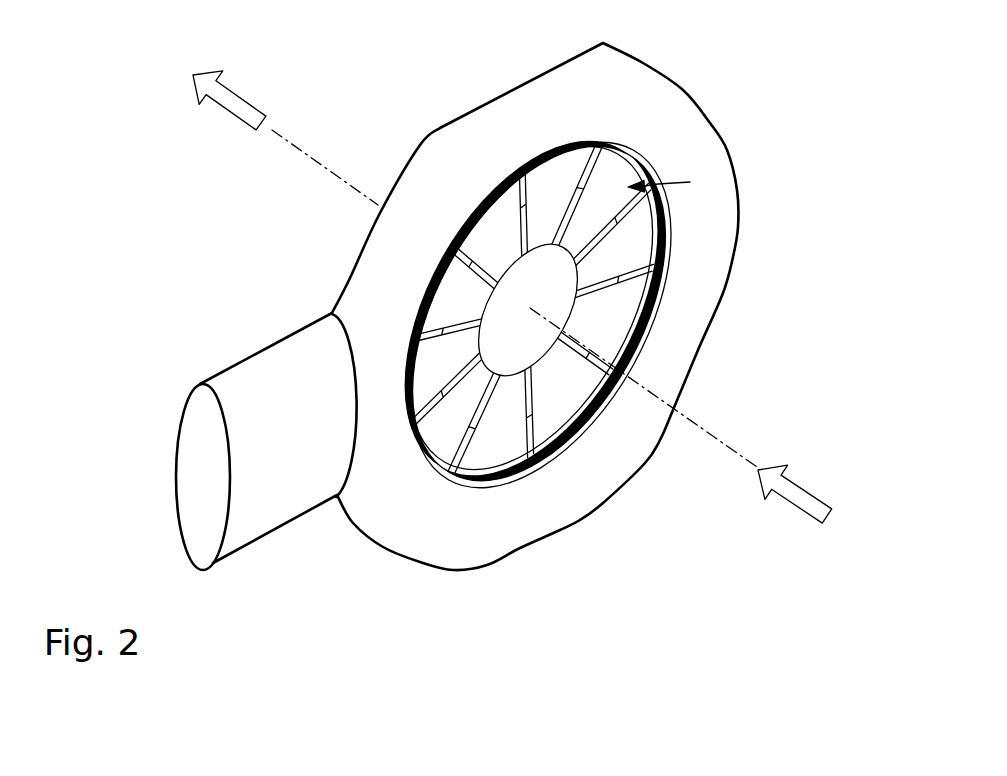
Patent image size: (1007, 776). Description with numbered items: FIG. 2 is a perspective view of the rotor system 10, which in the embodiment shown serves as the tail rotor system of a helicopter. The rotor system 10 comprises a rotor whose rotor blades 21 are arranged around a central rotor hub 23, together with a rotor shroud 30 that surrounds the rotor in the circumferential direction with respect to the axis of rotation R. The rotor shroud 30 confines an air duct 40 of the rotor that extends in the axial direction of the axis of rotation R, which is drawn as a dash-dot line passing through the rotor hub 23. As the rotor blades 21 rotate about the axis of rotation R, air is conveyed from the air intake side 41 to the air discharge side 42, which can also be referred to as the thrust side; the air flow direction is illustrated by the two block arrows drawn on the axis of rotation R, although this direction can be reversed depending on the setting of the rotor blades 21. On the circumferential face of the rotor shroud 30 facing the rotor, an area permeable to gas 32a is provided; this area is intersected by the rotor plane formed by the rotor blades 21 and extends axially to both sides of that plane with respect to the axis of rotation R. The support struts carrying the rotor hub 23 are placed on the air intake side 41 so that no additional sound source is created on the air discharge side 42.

The rotor system 10 is at (497, 324).
The rotor blades 21 is at (543, 290).
The rotor hub 23 is at (533, 295).
The rotor shroud 30 is at (430, 542).
The area permeable to gas 32a is at (641, 317).
The air duct 40 is at (690, 182).
The air intake side 41 is at (795, 485).
The air discharge side 42 is at (229, 88).
The axis of rotation R is at (703, 430).